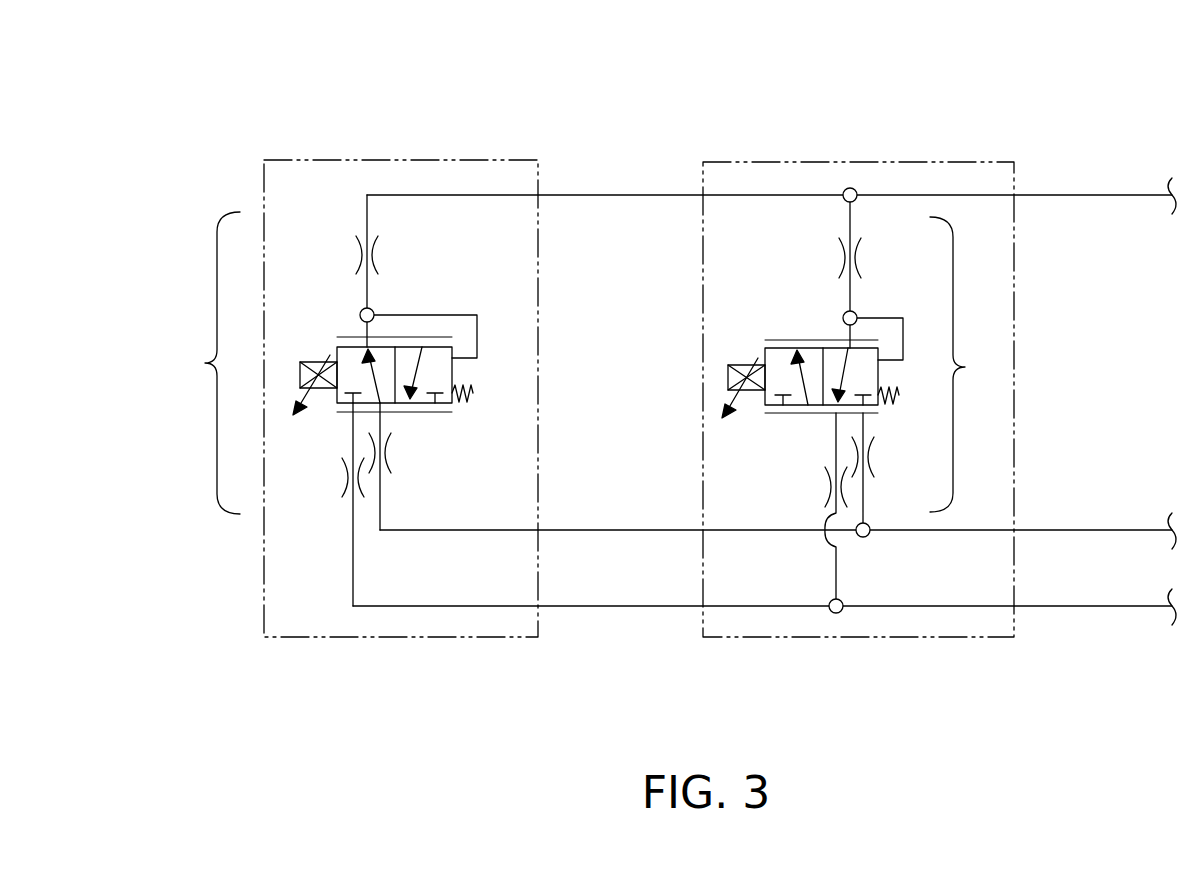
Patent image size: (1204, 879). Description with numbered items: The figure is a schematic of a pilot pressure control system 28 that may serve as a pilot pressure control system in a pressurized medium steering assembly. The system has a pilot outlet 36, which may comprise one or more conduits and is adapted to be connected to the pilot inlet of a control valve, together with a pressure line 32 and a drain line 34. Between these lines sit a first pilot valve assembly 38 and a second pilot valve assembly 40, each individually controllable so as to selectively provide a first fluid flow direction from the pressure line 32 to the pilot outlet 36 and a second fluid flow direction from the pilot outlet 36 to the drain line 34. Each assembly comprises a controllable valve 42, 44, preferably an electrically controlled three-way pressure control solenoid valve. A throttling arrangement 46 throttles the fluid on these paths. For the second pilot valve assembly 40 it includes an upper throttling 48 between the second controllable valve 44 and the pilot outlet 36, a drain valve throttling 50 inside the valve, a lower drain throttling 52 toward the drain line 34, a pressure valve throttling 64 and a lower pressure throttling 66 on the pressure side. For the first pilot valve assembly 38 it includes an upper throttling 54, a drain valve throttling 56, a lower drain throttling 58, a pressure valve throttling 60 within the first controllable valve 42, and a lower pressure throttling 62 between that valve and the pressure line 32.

The pilot pressure control system 28 is at (246, 97).
The pressure line 32 is at (1118, 530).
The drain line 34 is at (1118, 608).
The pilot outlet 36 is at (1120, 195).
The first pilot valve assembly 38 is at (376, 645).
The second pilot valve assembly 40 is at (802, 648).
The first controllable valve 42 is at (439, 400).
The second controllable valve 44 is at (789, 400).
The throttling arrangement 46 is at (584, 363).
The upper throttling 48 is at (861, 250).
The drain valve throttling 50 is at (846, 372).
The lower drain throttling 52 is at (828, 476).
The upper throttling 54 is at (354, 252).
The drain valve throttling 56 is at (422, 364).
The lower drain throttling 58 is at (344, 489).
The pressure valve throttling 60 is at (370, 383).
The lower pressure throttling 62 is at (389, 442).
The pressure valve throttling 64 is at (800, 380).
The lower pressure throttling 66 is at (869, 441).